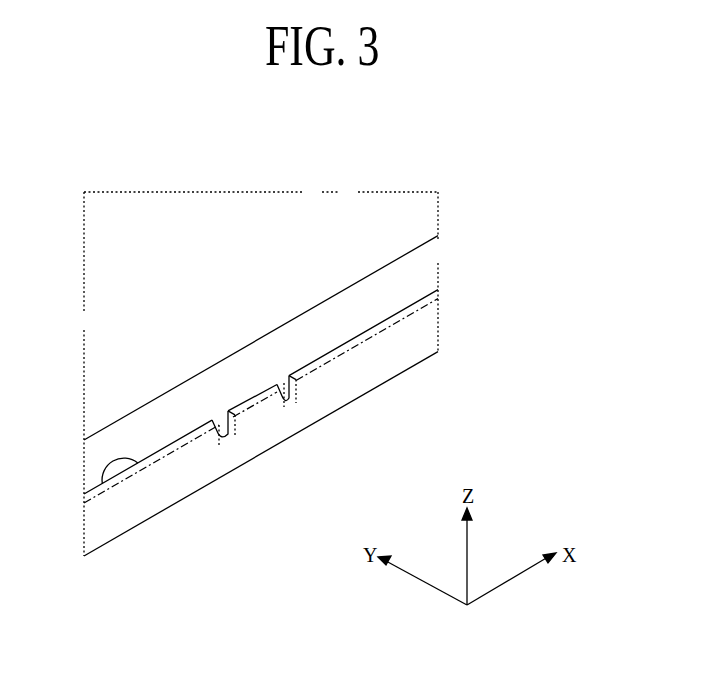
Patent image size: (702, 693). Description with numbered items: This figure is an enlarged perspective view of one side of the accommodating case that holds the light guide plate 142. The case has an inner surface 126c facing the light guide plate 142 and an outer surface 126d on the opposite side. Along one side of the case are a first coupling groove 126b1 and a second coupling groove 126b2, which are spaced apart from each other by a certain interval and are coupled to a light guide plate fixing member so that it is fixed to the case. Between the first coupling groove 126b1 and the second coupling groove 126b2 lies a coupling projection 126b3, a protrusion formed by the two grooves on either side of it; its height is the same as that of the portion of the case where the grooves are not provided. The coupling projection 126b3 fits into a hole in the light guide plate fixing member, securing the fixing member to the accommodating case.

The light guide plate 142 is at (262, 212).
The outer surface 126d is at (153, 488).
The inner surface 126c is at (102, 484).
The first coupling groove 126b1 is at (222, 440).
The second coupling groove 126b2 is at (289, 402).
The coupling projection 126b3 is at (248, 402).